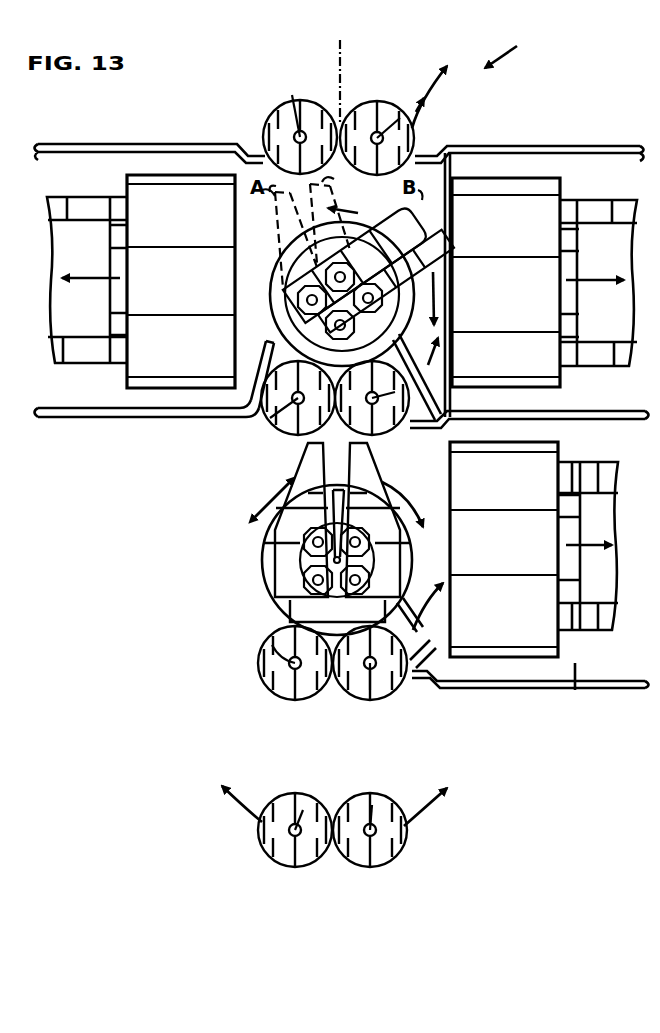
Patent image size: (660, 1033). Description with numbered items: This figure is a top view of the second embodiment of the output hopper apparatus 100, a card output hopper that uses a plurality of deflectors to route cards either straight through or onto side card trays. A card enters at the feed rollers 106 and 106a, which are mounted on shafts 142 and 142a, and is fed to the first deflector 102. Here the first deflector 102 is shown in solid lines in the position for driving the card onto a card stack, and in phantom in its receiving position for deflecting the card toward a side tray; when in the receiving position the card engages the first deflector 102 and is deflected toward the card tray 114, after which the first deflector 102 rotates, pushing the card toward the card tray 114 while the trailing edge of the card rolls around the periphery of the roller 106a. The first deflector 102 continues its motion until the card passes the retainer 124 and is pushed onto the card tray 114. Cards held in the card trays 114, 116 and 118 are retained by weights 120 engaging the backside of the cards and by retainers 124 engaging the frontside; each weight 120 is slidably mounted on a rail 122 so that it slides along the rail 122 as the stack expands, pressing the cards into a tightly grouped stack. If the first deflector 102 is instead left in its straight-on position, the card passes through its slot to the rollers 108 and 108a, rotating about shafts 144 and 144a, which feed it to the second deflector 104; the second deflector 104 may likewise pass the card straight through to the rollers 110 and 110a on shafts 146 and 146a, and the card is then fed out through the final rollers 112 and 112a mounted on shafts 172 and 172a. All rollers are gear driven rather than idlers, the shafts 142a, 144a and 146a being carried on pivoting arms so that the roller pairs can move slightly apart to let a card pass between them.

The output hopper apparatus 100 is at (522, 48).
The first deflector 102 is at (425, 240).
The second deflector 104 is at (292, 514).
The feed roller 106 is at (278, 111).
The feed roller 106a is at (411, 138).
The roller 108 is at (278, 421).
The roller 108a is at (369, 436).
The roller 110 is at (282, 690).
The roller 110a is at (369, 699).
The roller 112 is at (262, 846).
The roller 112a is at (400, 846).
The card tray 114 is at (539, 156).
The card tray 116 is at (186, 122).
The card tray 118 is at (575, 688).
The weight 120 is at (208, 293).
The rail 122 is at (94, 208).
The retainer 124 is at (262, 346).
The shaft 142 is at (302, 116).
The shaft 142a is at (398, 118).
The shaft 144 is at (270, 415).
The shaft 144a is at (396, 392).
The shaft 146 is at (272, 648).
The shaft 146a is at (372, 694).
The shaft 172 is at (303, 812).
The shaft 172a is at (372, 805).